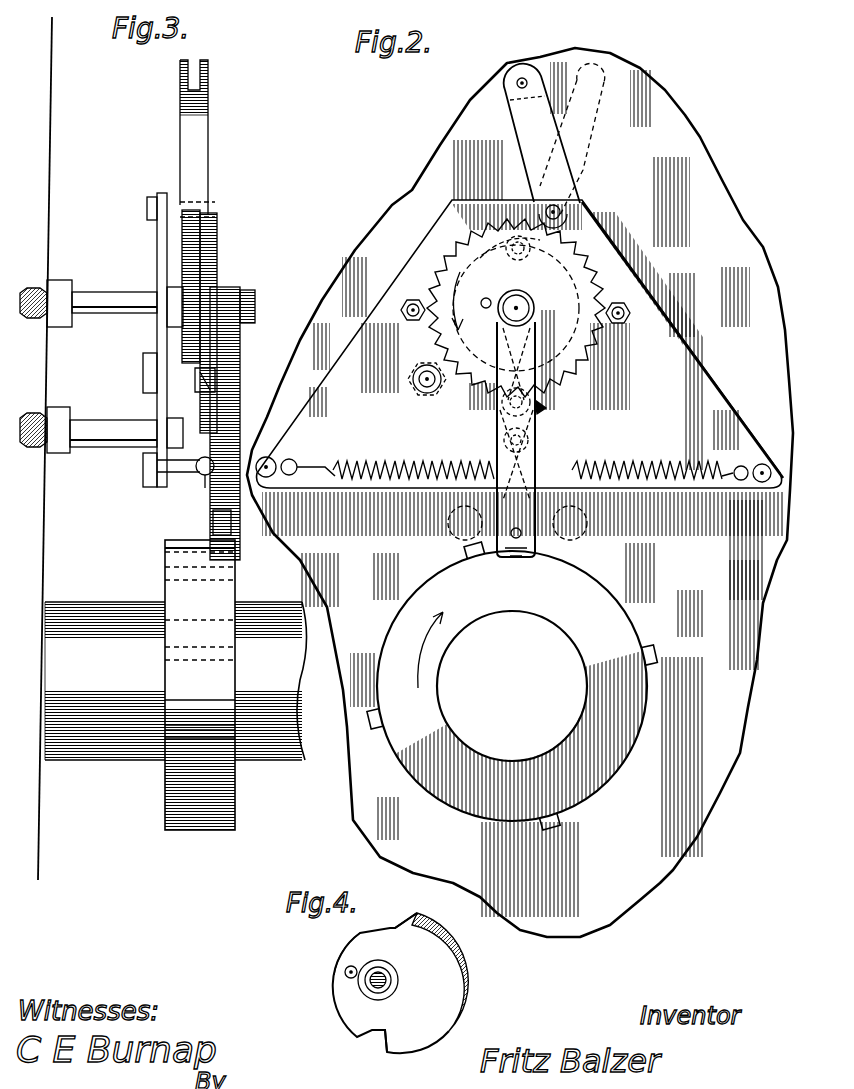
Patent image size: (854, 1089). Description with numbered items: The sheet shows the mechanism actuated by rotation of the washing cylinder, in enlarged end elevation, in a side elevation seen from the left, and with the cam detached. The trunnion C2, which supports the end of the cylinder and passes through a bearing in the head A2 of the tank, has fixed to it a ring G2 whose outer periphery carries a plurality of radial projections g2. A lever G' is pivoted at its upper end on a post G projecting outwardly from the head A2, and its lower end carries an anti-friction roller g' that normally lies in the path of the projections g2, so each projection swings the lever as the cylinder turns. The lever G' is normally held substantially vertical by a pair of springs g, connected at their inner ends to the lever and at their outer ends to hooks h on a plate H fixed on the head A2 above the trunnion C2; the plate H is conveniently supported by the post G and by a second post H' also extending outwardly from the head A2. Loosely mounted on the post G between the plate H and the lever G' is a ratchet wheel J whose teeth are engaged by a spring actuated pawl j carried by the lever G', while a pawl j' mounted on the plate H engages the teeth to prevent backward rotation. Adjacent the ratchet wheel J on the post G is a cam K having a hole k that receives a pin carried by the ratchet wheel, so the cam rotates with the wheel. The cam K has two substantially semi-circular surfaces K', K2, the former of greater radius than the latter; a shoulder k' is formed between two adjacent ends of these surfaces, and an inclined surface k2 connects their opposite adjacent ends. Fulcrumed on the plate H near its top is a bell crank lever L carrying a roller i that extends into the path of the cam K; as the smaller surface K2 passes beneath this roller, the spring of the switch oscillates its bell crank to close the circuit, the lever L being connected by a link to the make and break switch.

In FIG. 3, the head of the tank A2 is at (49, 212).
In FIG. 3, the bell crank lever L is at (197, 158).
In FIG. 2, the bell crank lever L is at (556, 180).
In FIG. 3, the ratchet wheel J is at (219, 253).
In FIG. 2, the ratchet wheel J is at (597, 253).
In FIG. 3, the cam K is at (236, 323).
In FIG. 2, the cam K is at (588, 264).
In FIG. 4, the cam K is at (416, 983).
In FIG. 3, the post G is at (134, 340).
In FIG. 2, the post G is at (570, 285).
In FIG. 3, the plate H is at (101, 316).
In FIG. 2, the plate H is at (520, 344).
In FIG. 3, the second post H' is at (101, 420).
In FIG. 2, the second post H' is at (538, 483).
In FIG. 3, the lever G' is at (241, 423).
In FIG. 2, the lever G' is at (572, 463).
In FIG. 2, the spring actuated pawl j is at (550, 420).
In FIG. 3, the pawl j' is at (234, 386).
In FIG. 2, the pawl j' is at (419, 390).
In FIG. 2, the springs g is at (515, 452).
In FIG. 3, the hooks h is at (187, 477).
In FIG. 2, the hooks h is at (282, 462).
In FIG. 3, the anti-friction roller g' is at (197, 522).
In FIG. 2, the anti-friction roller g' is at (559, 556).
In FIG. 3, the ring G2 is at (165, 578).
In FIG. 2, the ring G2 is at (445, 800).
In FIG. 3, the radial projections g2 is at (232, 719).
In FIG. 2, the radial projections g2 is at (655, 658).
In FIG. 3, the trunnion C2 is at (118, 756).
In FIG. 2, the trunnion C2 is at (457, 733).
In FIG. 2, the lever pivot i is at (585, 248).
In FIG. 4, the semi-circular cam surface K' is at (446, 970).
In FIG. 4, the semi-circular cam surface K2 is at (330, 954).
In FIG. 4, the hole k is at (326, 992).
In FIG. 4, the shoulder k' is at (376, 1055).
In FIG. 4, the inclined surface k2 is at (395, 927).